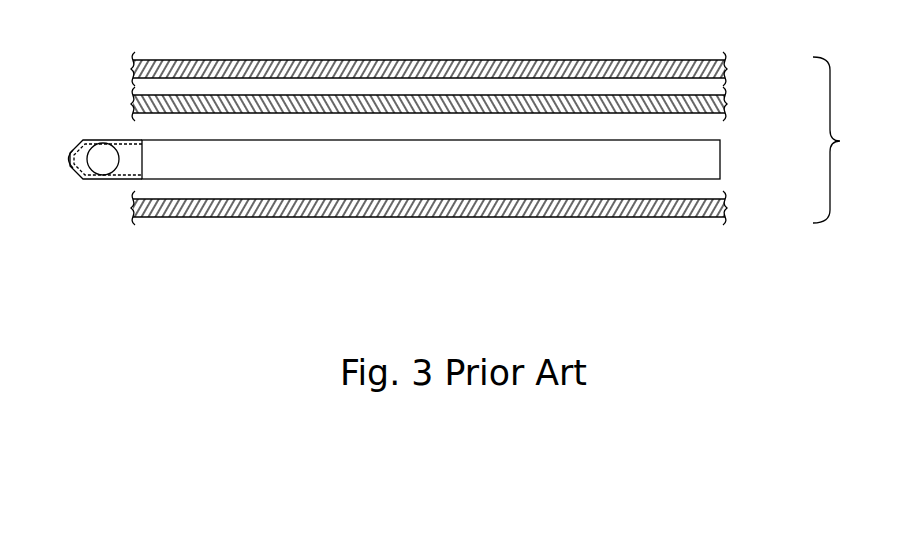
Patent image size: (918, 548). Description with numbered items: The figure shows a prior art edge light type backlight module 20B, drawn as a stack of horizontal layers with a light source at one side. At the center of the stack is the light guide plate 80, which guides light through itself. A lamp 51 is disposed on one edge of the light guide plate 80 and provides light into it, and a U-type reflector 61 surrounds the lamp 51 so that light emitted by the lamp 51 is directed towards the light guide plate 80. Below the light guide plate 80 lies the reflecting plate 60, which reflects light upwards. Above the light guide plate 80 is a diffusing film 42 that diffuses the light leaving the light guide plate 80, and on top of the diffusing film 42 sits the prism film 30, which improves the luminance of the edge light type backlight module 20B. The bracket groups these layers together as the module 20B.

The prism film 30 is at (697, 56).
The diffusing film 42 is at (697, 115).
The light guide plate 80 is at (722, 169).
The reflecting plate 60 is at (690, 218).
The lamp 51 is at (88, 150).
The U-type reflector 61 is at (110, 180).
The edge light type backlight module 20B is at (855, 140).